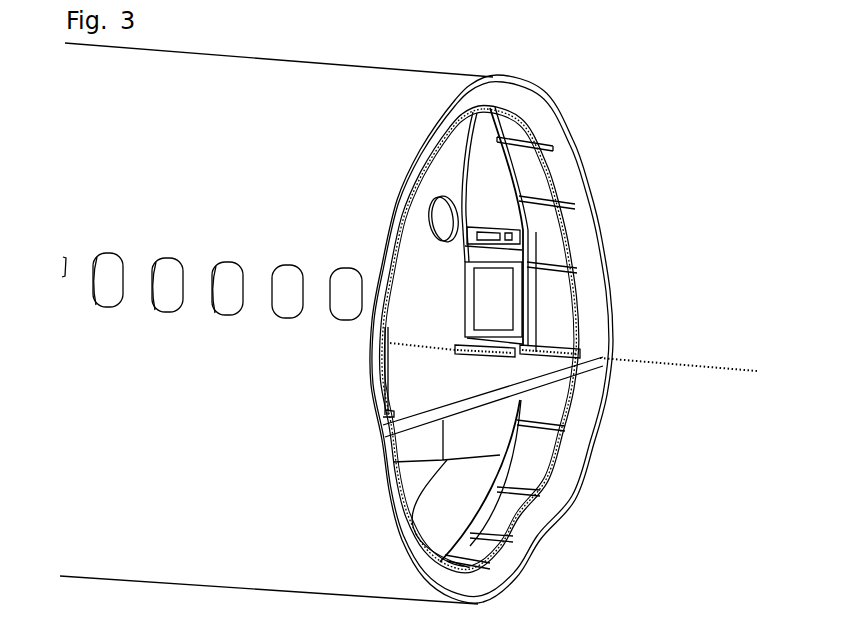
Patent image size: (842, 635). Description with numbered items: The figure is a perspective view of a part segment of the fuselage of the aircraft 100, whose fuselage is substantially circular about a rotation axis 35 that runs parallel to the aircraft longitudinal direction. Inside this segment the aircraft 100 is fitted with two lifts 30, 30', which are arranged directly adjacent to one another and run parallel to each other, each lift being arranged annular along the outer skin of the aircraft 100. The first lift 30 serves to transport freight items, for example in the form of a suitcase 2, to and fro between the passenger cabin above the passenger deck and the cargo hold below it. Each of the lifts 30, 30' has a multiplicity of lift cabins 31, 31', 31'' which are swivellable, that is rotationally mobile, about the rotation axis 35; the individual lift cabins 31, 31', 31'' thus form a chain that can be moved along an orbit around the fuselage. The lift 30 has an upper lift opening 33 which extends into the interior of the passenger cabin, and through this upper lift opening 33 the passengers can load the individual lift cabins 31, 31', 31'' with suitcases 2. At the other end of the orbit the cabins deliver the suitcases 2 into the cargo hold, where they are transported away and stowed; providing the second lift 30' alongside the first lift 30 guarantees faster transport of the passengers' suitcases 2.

The aircraft 100 is at (375, 123).
The first lift 30 is at (600, 205).
The suitcase 2 is at (500, 300).
The upper lift opening 33 is at (527, 322).
The rotation axis 35 is at (712, 380).
The second lift 30' is at (599, 447).
The lift cabin 31 is at (582, 495).
The lift cabin 31' is at (559, 541).
The lift cabin 31'' is at (536, 575).